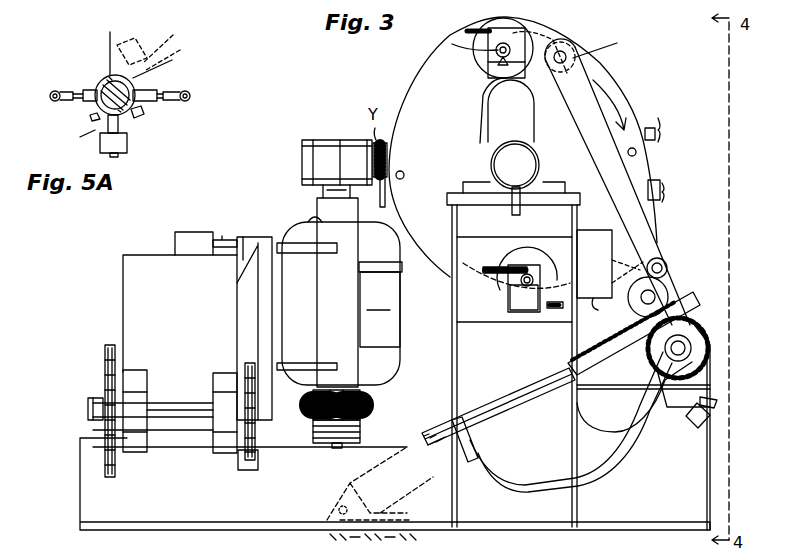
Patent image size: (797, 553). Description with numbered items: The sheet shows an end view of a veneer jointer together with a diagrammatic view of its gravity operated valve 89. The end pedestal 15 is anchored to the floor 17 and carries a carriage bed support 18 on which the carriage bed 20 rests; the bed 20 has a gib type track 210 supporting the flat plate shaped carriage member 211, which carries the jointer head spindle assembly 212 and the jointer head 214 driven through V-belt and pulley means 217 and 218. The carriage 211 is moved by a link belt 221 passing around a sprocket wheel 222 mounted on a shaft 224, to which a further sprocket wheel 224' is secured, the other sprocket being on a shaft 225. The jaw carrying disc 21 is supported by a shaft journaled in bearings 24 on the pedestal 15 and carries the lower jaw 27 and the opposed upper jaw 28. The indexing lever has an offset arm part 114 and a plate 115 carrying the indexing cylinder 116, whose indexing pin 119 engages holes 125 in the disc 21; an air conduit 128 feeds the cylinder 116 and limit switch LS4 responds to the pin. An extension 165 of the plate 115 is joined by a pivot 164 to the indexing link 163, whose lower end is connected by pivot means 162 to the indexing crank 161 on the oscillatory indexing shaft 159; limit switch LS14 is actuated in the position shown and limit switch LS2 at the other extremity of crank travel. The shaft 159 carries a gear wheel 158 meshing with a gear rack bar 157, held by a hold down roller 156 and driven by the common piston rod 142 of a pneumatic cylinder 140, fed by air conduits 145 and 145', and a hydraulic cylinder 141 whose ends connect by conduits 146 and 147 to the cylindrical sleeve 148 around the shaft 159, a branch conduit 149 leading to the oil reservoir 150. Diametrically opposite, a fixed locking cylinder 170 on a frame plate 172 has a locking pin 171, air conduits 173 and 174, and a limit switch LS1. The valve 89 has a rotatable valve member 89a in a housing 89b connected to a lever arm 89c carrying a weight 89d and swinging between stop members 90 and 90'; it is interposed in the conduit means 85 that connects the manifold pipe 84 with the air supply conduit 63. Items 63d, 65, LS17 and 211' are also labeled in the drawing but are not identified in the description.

In FIG. 5A, the gravity operated valve 89 is at (86, 52).
In FIG. 5A, the housing 89b is at (107, 44).
In FIG. 5A, the weight 89d is at (144, 40).
In FIG. 5A, the lever arm 89c is at (124, 87).
In FIG. 5A, the rotatable valve member 89a is at (168, 64).
In FIG. 5A, the conduit means 85 is at (88, 89).
In FIG. 5A, the manifold pipe 84 is at (50, 96).
In FIG. 5A, the air supply conduit 63 is at (190, 96).
In FIG. 5A, the stop member 90 is at (80, 116).
In FIG. 5A, the stop member 90' is at (159, 116).
In FIG. 3, the carriage bed support 18 is at (83, 497).
In FIG. 3, the floor 17 is at (427, 524).
In FIG. 3, the air conduit 145 is at (389, 491).
In FIG. 3, the carriage bed 20 is at (133, 258).
In FIG. 3, the shaft 224 is at (165, 411).
In FIG. 3, the sprocket wheel 224' is at (81, 400).
In FIG. 3, the shaft 225 is at (107, 347).
In FIG. 3, the sprocket wheel 222 is at (258, 432).
In FIG. 3, the link belt 221 is at (245, 471).
In FIG. 3, the gib type track 210 is at (247, 273).
In FIG. 3, the limit switch LS17 is at (195, 231).
In FIG. 3, the bracket 211' is at (238, 229).
In FIG. 3, the jointer head 214 is at (303, 165).
In FIG. 3, the holes 125 is at (410, 165).
In FIG. 3, the jointer head spindle assembly 212 is at (350, 290).
In FIG. 3, the carriage member 211 is at (334, 301).
In FIG. 3, the V-belt and pulley means 218 is at (361, 401).
In FIG. 3, the V-belt and pulley means 217 is at (361, 430).
In FIG. 3, the end pedestal 15 is at (453, 363).
In FIG. 3, the shaft 63d is at (512, 214).
In FIG. 3, the bearings 24 is at (490, 156).
In FIG. 3, the roller ring 65 is at (494, 171).
In FIG. 3, the offset angular arm part 114 is at (497, 127).
In FIG. 3, the plate 115 is at (487, 90).
In FIG. 3, the limit switch LS4 is at (488, 71).
In FIG. 3, the air conduit 128 is at (470, 33).
In FIG. 3, the indexing pin 119 is at (461, 42).
In FIG. 3, the indexing cylinder 116 is at (550, 30).
In FIG. 3, the jaw carrying disc 21 is at (623, 97).
In FIG. 3, the upper jaw 28 is at (665, 130).
In FIG. 3, the lower jaw 27 is at (668, 193).
In FIG. 3, the indexing link 163 is at (652, 236).
In FIG. 3, the extension 165 is at (571, 46).
In FIG. 3, the pivot 164 is at (598, 48).
In FIG. 3, the pivot means 162 is at (665, 260).
In FIG. 3, the indexing crank 161 is at (667, 275).
In FIG. 3, the hold down roller 156 is at (656, 297).
In FIG. 3, the gear wheel 158 is at (680, 323).
In FIG. 3, the limit switch LS14 is at (553, 253).
In FIG. 3, the oil reservoir 150 is at (606, 254).
In FIG. 3, the branch conduit 149 is at (595, 294).
In FIG. 3, the locking cylinder 170 is at (510, 255).
In FIG. 3, the locking pin 171 is at (512, 305).
In FIG. 3, the air conduit 173 is at (521, 282).
In FIG. 3, the frame plate 172 is at (485, 318).
In FIG. 3, the limit switch LS1 is at (519, 318).
In FIG. 3, the air conduit 174 is at (555, 312).
In FIG. 3, the gear rack bar 157 is at (600, 360).
In FIG. 3, the indexing shaft 159 is at (645, 365).
In FIG. 3, the cylindrical sleeve 148 is at (700, 348).
In FIG. 3, the limit switch LS2 is at (712, 412).
In FIG. 3, the piston rod 142 is at (585, 386).
In FIG. 3, the conduit 146 is at (536, 478).
In FIG. 3, the conduit 147 is at (596, 428).
In FIG. 3, the hydraulic cylinder 141 is at (498, 404).
In FIG. 3, the pneumatic cylinder 140 is at (426, 437).
In FIG. 3, the air conduit 145' is at (475, 460).